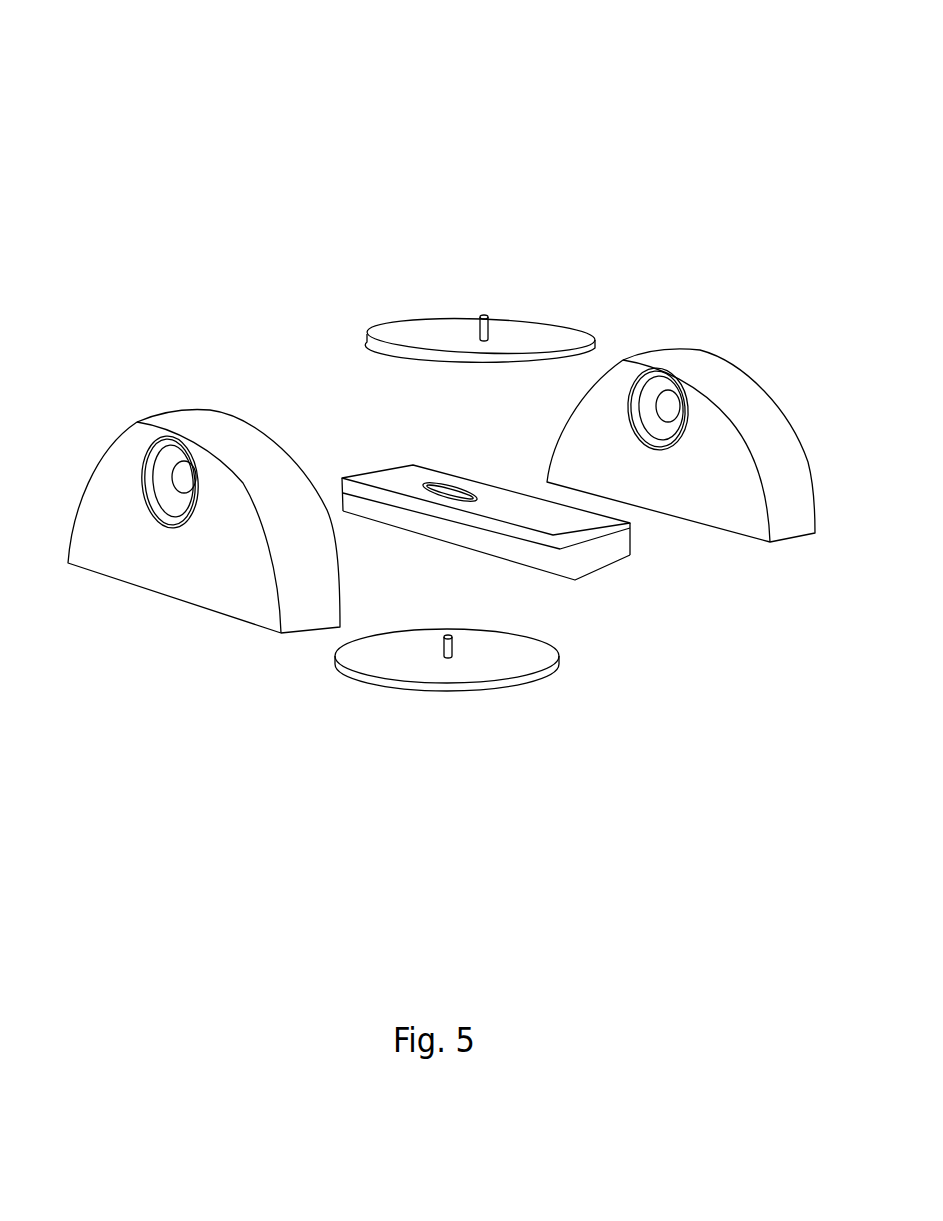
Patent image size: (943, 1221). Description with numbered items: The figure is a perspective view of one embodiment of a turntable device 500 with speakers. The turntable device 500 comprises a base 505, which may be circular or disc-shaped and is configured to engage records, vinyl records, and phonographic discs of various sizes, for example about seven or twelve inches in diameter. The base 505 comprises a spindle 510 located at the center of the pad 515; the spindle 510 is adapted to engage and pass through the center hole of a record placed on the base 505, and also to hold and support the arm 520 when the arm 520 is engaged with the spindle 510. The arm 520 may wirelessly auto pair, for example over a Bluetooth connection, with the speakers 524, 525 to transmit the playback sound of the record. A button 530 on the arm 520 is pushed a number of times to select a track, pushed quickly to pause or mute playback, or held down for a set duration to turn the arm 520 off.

The turntable device 500 is at (258, 196).
The base 505 is at (418, 276).
The spindle 510 is at (485, 325).
The pad 515 is at (523, 340).
The arm 520 is at (646, 605).
The speaker 524 is at (153, 562).
The speaker 525 is at (687, 385).
The button 530 is at (458, 498).